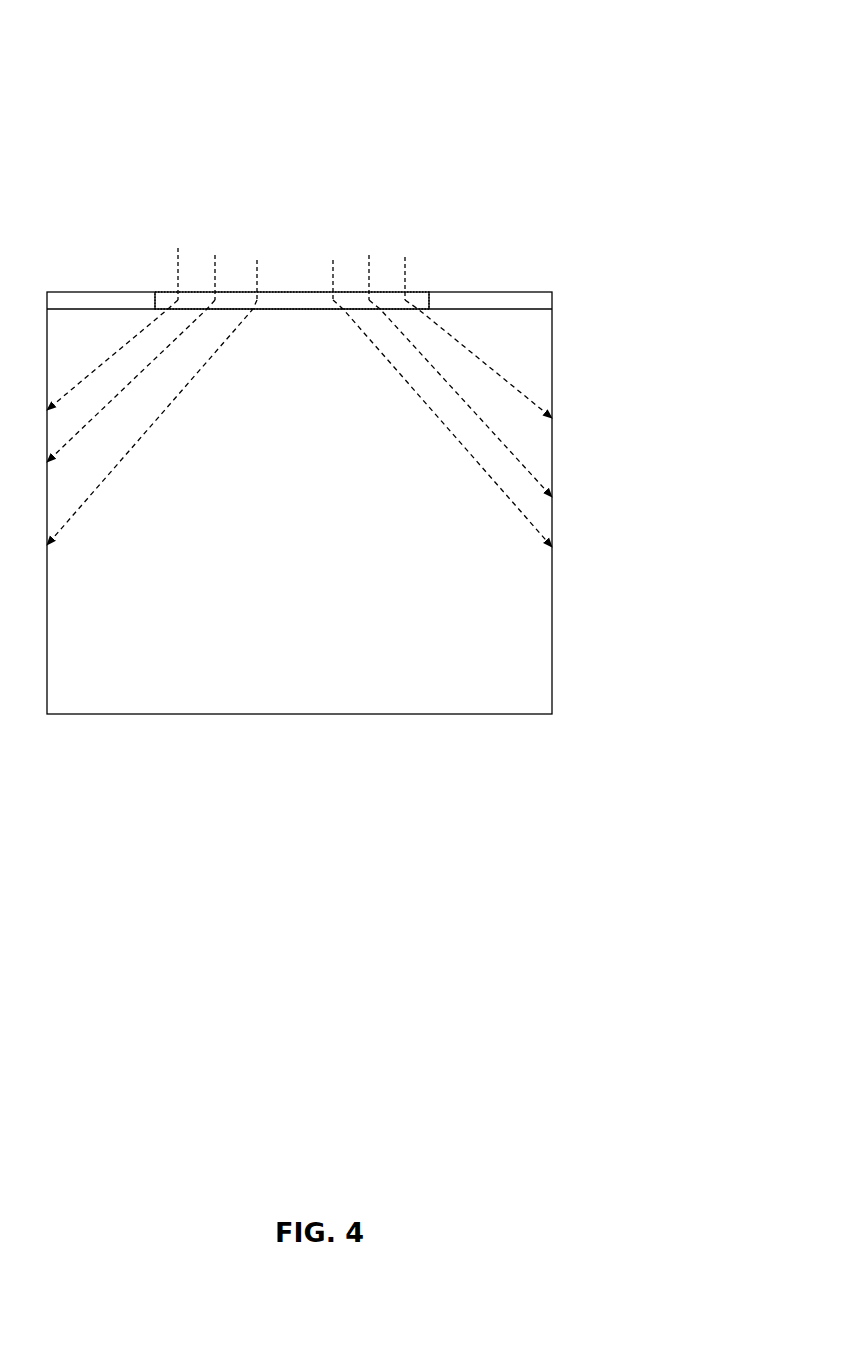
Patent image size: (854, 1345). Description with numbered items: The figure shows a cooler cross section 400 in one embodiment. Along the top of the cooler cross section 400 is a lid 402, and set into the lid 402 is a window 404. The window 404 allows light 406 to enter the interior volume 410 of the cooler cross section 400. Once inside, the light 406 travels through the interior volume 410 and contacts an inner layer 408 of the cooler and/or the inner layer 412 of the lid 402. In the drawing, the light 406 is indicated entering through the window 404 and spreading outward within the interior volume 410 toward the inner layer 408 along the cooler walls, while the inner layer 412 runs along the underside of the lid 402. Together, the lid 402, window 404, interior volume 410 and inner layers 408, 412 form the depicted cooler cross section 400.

The cooler cross section 400 is at (614, 58).
The lid 402 is at (83, 298).
The window 404 is at (302, 292).
The light 406 is at (405, 259).
The inner layer of the cooler 408 is at (552, 452).
The interior volume 410 is at (291, 668).
The inner layer of the lid 412 is at (513, 313).